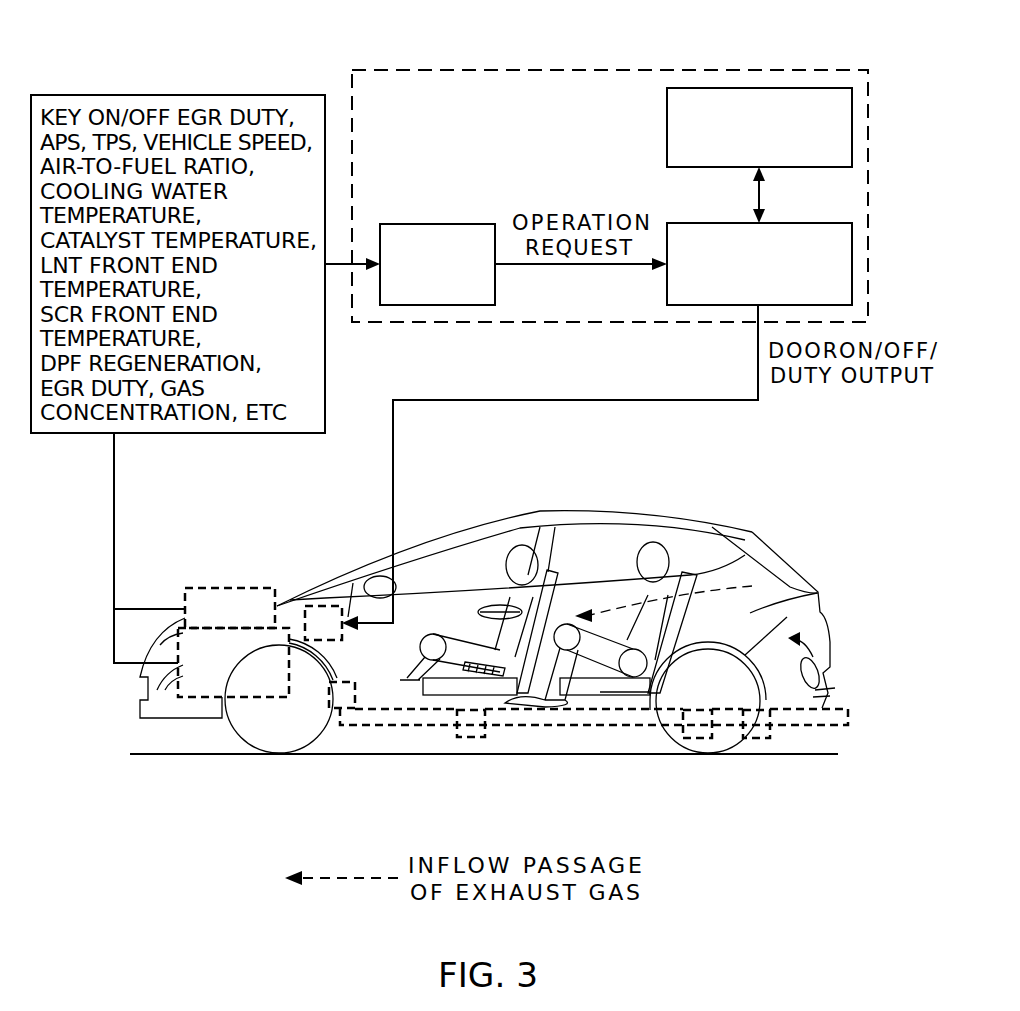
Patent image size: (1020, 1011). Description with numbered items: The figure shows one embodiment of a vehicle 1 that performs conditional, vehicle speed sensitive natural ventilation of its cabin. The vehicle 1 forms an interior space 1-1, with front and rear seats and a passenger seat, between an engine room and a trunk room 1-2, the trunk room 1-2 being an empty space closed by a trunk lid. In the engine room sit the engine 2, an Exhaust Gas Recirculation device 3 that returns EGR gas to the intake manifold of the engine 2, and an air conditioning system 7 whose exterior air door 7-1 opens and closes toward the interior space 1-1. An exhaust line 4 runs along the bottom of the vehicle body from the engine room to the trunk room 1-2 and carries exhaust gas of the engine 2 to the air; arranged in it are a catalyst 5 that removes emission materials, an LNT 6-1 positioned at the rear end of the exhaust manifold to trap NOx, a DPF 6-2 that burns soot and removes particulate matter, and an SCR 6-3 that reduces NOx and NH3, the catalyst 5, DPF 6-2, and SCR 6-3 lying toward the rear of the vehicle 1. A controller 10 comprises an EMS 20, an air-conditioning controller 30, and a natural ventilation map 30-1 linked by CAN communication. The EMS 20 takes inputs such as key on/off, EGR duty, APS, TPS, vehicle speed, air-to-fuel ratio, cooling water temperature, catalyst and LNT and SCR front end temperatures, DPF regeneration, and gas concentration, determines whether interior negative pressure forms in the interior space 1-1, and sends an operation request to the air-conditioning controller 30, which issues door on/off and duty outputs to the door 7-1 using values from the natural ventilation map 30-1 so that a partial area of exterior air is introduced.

The vehicle 1 is at (790, 532).
The interior space 1-1 is at (475, 568).
The trunk room 1-2 is at (820, 603).
The engine 2 is at (248, 698).
The Exhaust Gas Recirculation (EGR) 3 is at (233, 588).
The exhaust line 4 is at (592, 725).
The catalyst 5 is at (470, 738).
The Lean NOx Trap (LNT) 6-1 is at (343, 708).
The Diesel Particulate Filter (DPF) 6-2 is at (697, 738).
The Selective Catalytic Reduction (SCR) 6-3 is at (757, 738).
The air conditioning system 7 is at (328, 600).
The exterior air door 7-1 is at (348, 614).
The controller 10 is at (604, 70).
The Engine Management System (EMS) 20 is at (438, 224).
The air-conditioning controller 30 is at (852, 264).
The natural ventilation map 30-1 is at (852, 125).